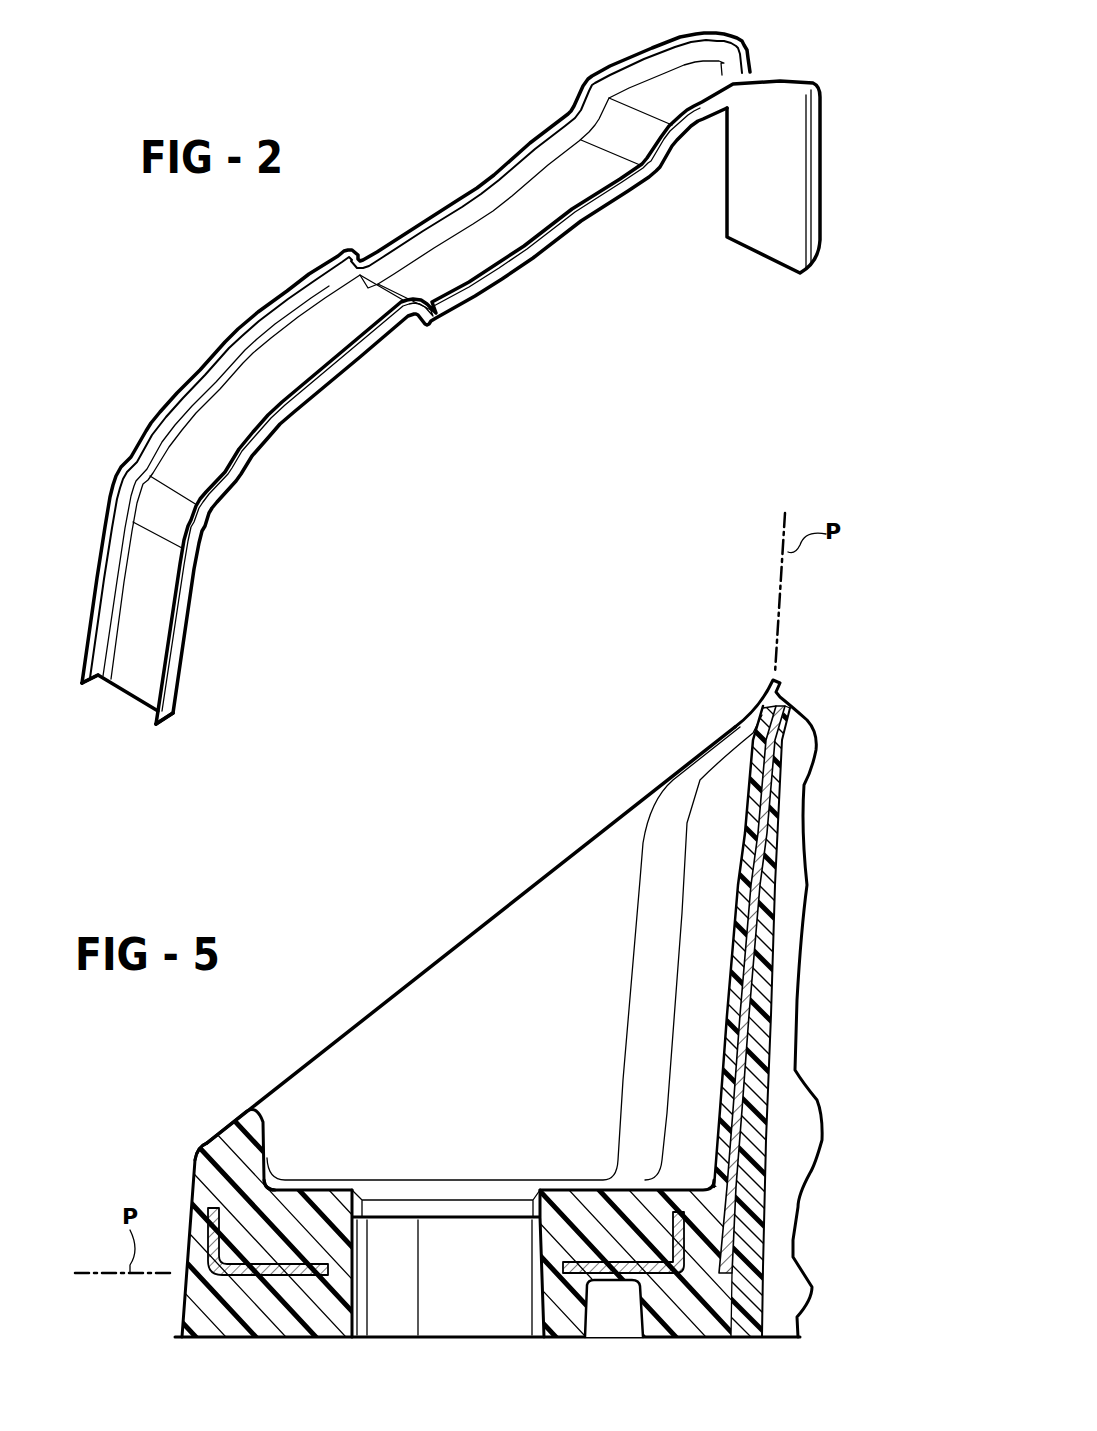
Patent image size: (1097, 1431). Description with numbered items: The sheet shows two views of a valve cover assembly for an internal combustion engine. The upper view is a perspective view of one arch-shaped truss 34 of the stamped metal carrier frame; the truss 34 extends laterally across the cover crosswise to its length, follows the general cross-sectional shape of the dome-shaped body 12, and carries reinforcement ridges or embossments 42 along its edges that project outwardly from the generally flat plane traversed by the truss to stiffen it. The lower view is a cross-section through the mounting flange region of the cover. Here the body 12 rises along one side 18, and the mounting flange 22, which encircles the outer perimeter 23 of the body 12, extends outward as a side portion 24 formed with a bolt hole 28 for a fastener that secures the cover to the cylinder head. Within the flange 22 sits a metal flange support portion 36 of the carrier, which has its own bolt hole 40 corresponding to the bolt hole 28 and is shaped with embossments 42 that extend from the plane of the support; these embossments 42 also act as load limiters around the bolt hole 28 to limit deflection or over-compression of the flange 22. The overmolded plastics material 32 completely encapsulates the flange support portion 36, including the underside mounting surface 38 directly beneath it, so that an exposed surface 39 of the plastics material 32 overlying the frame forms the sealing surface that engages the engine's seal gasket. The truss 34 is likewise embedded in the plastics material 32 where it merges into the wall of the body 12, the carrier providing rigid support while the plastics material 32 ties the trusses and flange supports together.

In FIG. 5, the body 12 is at (747, 793).
In FIG. 5, the side 18 is at (193, 1182).
In FIG. 5, the mounting flange 22 is at (342, 1200).
In FIG. 5, the outer perimeter 23 is at (180, 1302).
In FIG. 5, the side portion 24 is at (317, 1190).
In FIG. 5, the bolt hole 28 is at (465, 1308).
In FIG. 5, the plastics material 32 is at (755, 735).
In FIG. 2, the arch-shaped truss 34 is at (503, 280).
In FIG. 5, the arch-shaped truss 34 is at (793, 730).
In FIG. 5, the flange support portion 36 is at (612, 1258).
In FIG. 5, the underside mounting surface 38 is at (293, 1280).
In FIG. 5, the exposed surface 39 is at (220, 1336).
In FIG. 5, the bolt hole 40 is at (345, 1195).
In FIG. 2, the reinforcement embossment 42 is at (94, 591).
In FIG. 5, the reinforcement embossment 42 is at (213, 1230).